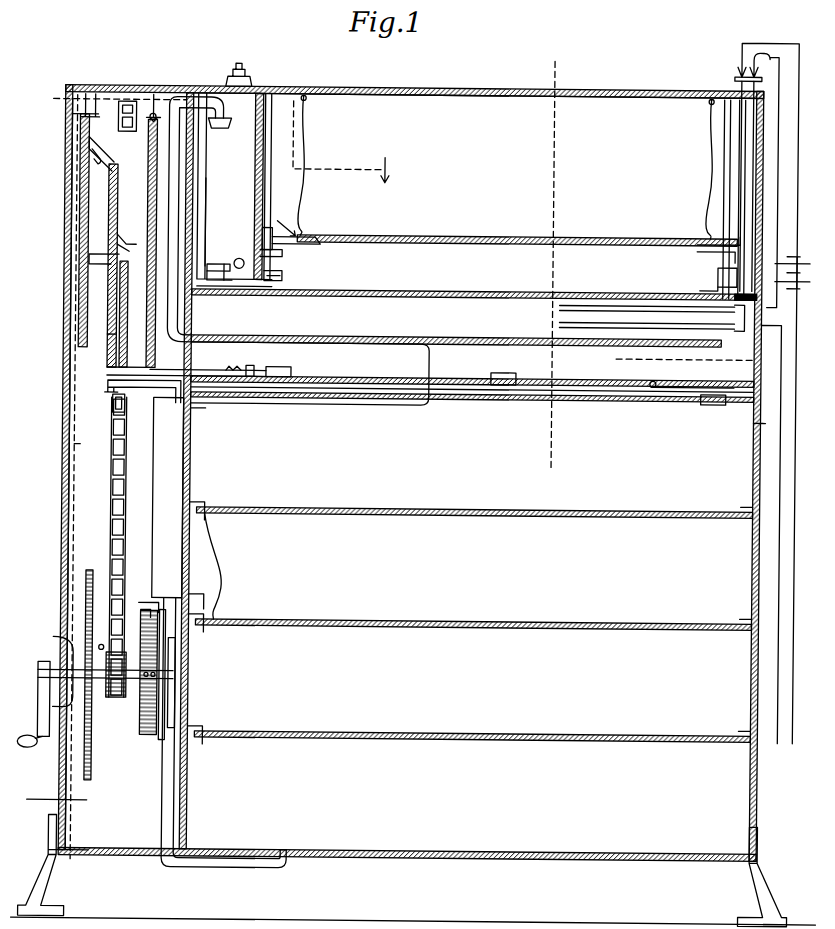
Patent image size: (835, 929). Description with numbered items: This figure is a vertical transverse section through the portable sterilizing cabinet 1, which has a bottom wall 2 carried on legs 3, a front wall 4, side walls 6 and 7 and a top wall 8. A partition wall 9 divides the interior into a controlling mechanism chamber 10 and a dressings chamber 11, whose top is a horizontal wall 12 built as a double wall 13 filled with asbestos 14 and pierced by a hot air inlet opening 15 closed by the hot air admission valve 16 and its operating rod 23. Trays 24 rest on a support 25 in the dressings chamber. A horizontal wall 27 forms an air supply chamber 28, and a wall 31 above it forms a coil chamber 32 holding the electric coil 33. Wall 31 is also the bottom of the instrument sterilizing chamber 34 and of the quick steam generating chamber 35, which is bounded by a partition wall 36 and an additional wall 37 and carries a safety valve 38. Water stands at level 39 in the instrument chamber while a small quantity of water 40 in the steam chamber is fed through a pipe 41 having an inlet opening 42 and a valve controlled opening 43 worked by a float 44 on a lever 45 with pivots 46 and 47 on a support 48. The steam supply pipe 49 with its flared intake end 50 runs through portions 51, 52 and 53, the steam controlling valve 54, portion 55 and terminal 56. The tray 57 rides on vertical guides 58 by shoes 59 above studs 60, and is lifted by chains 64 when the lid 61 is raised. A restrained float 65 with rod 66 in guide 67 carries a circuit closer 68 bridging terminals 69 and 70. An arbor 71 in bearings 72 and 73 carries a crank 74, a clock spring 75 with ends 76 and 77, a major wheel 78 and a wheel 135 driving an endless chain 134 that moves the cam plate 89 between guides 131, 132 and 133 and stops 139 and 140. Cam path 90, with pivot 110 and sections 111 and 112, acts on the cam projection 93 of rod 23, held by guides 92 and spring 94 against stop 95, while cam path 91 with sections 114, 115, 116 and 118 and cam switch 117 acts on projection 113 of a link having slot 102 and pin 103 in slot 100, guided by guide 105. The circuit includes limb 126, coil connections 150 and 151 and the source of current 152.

The sterilizing cabinet 1 is at (55, 478).
The bottom wall 2 is at (385, 859).
The legs or supports 3 is at (562, 69).
The front wall 4 is at (221, 132).
The side wall 6 is at (31, 706).
The side wall 7 is at (760, 765).
The top wall 8 is at (250, 92).
The partition wall 9 is at (190, 790).
The controlling mechanism chamber 10 is at (56, 799).
The dressings chamber 11 is at (264, 778).
The horizontal wall 12 is at (300, 390).
The double wall 13 is at (340, 393).
The asbestos 14 is at (385, 400).
The hot air inlet opening 15 is at (698, 395).
The hot air admission valve 16 is at (705, 374).
The operating rod 23 is at (572, 378).
The trays 24 is at (445, 507).
The support 25 is at (205, 616).
The horizontal wall 27 is at (520, 372).
The air supply chamber 28 is at (462, 372).
The wall 31 is at (392, 291).
The coil chamber 32 is at (498, 294).
The electric coil 33 is at (570, 303).
The instrument sterilizing chamber 34 is at (452, 98).
The quick steam generating chamber 35 is at (262, 133).
The partition wall 36 is at (270, 155).
The additional wall 37 is at (202, 188).
The safety valve 38 is at (240, 72).
The water level 39 is at (463, 192).
The water 40 is at (220, 268).
The pipe 41 is at (280, 274).
The inlet opening 42 is at (281, 279).
The valve controlled opening 43 is at (205, 266).
The float 44 is at (290, 217).
The lever 45 is at (238, 270).
The pivot 46 is at (210, 282).
The pivot 47 is at (222, 266).
The support 48 is at (228, 273).
The steam supply pipe 49 is at (178, 100).
The flared intake end 50 is at (260, 110).
The pipe portion in coil chamber 51 is at (330, 337).
The downward pipe portion 52 is at (408, 358).
The pipe portion in dressings chamber 53 is at (255, 400).
The steam controlling valve 54 is at (208, 405).
The downward pipe portion 55 is at (165, 807).
The terminal 56 is at (284, 853).
The tray 57 is at (498, 236).
The vertical guides 58 is at (268, 213).
The shoes 59 is at (300, 240).
The adjustable studs 60 is at (280, 258).
The lid 61 is at (630, 94).
The chains 64 is at (300, 122).
The restrained float 65 is at (716, 273).
The rod 66 is at (728, 186).
The guide 67 is at (713, 255).
The circuit closer 68 is at (731, 77).
The limb or terminal 69 is at (734, 50).
The limb or terminal 70 is at (777, 387).
The actuating shaft or arbor 71 is at (140, 710).
The bearing 72 is at (182, 692).
The bearing 73 is at (55, 655).
The crank 74 is at (29, 747).
The clock spring 75 is at (150, 738).
The spring end 76 is at (145, 672).
The anchor 77 is at (144, 603).
The major wheel 78 is at (94, 758).
The cam plate 89 is at (70, 300).
The cam path 90 is at (145, 160).
The cam path 91 is at (77, 215).
The guides 92 is at (305, 372).
The cam projection 93 is at (208, 359).
The spring 94 is at (239, 356).
The stop 95 is at (260, 361).
The slot 100 is at (139, 920).
The slot 102 is at (116, 236).
The pin 103 is at (149, 255).
The guide 105 is at (150, 127).
The pivot 110 is at (119, 285).
The cam path section 111 is at (121, 358).
The cam path section 112 is at (136, 403).
The cam projection 113 is at (107, 388).
The straight section 114 is at (107, 340).
The inclined section 115 is at (91, 162).
The cam path section 116 is at (77, 150).
The cam switch 117 is at (87, 150).
The cam path section 118 is at (87, 264).
The limb 126 is at (753, 430).
The guide 131 is at (74, 450).
The guide 132 is at (150, 480).
The guide 133 is at (140, 102).
The endless chain 134 is at (112, 520).
The wheel 135 is at (115, 700).
The stops 139 is at (95, 107).
The stop 140 is at (100, 648).
The coil connection 150 is at (733, 306).
The coil connection 151 is at (733, 323).
The source of current 152 is at (716, 288).